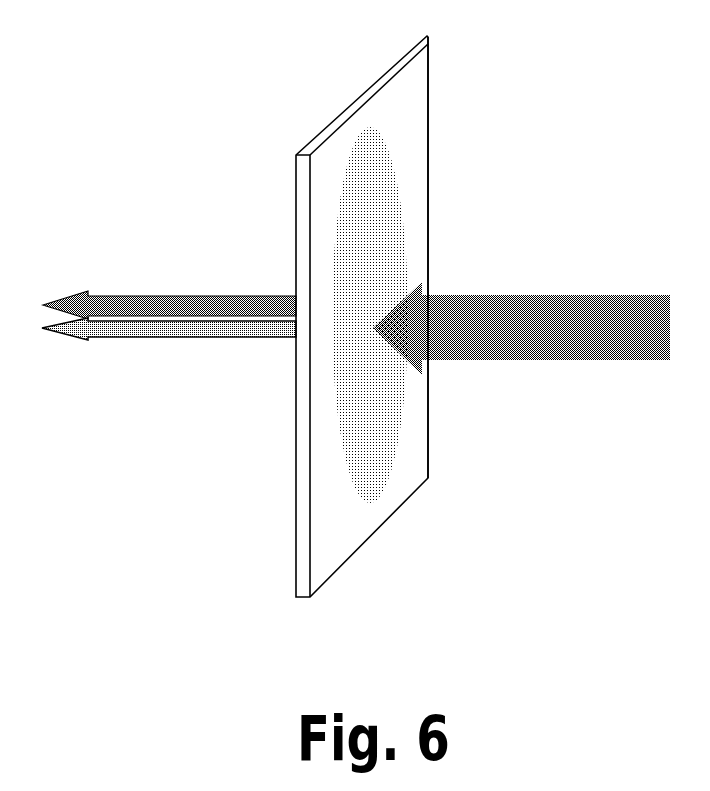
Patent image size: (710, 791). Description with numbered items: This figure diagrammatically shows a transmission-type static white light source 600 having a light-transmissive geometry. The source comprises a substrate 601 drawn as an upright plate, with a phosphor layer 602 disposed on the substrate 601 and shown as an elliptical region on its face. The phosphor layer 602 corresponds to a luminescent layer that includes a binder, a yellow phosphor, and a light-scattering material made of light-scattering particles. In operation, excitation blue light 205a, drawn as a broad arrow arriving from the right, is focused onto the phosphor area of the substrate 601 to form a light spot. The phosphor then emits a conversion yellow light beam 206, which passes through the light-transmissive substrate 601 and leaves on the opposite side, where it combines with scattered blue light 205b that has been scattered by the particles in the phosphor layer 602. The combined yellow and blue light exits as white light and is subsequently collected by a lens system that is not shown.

The static white light source 600 is at (283, 128).
The substrate 601 is at (426, 166).
The phosphor layer 602 is at (396, 237).
The excitation blue light 205a is at (600, 345).
The scattered blue light 205b is at (119, 292).
The conversion yellow light beam 206 is at (124, 339).